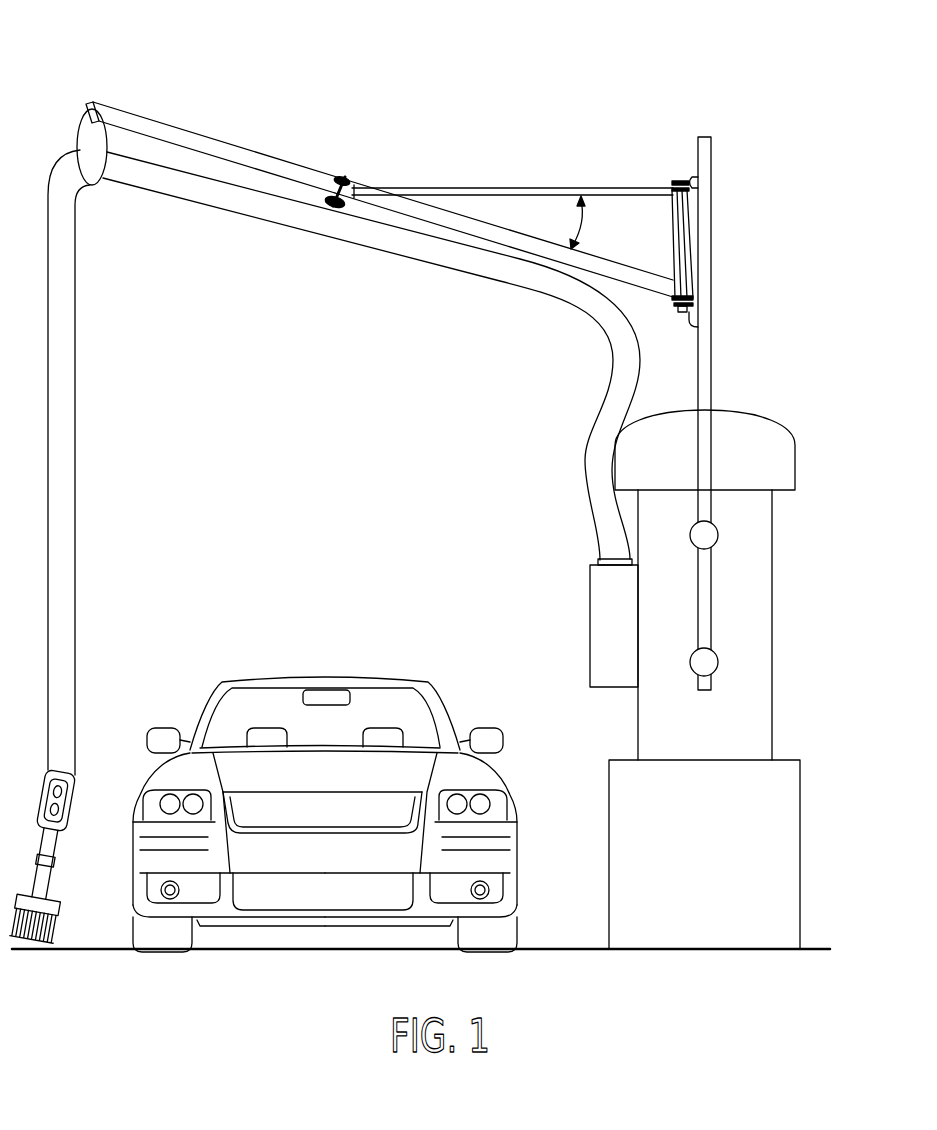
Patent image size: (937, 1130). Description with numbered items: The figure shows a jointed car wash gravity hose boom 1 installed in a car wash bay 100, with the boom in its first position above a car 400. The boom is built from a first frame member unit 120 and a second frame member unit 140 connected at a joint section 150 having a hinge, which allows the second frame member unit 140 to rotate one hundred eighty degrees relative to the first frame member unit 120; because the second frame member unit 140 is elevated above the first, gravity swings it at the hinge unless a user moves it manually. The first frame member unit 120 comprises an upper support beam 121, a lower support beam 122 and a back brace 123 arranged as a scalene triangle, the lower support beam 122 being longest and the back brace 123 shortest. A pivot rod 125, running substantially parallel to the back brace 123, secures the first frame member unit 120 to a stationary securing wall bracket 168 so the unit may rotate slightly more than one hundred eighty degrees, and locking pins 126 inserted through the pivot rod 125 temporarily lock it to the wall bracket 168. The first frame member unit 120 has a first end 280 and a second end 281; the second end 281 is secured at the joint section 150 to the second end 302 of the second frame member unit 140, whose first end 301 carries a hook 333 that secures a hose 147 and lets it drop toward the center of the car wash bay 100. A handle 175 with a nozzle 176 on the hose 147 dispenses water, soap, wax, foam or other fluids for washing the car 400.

The jointed car wash gravity hose boom 1 is at (470, 85).
The car wash bay 100 is at (351, 456).
The first frame member unit 120 is at (622, 264).
The upper support beam 121 is at (518, 186).
The lower support beam 122 is at (508, 229).
The back brace 123 is at (673, 243).
The pivot rod 125 is at (677, 182).
The locking pin 126 is at (678, 303).
The second frame member unit 140 is at (160, 120).
The hose 147 is at (63, 387).
The joint section 150 is at (345, 180).
The securing wall bracket 168 is at (693, 180).
The handle 175 is at (60, 820).
The nozzle 176 is at (48, 907).
The first end of the first frame member unit 280 is at (678, 285).
The second end of the first frame member unit 281 is at (360, 186).
The first end of the second frame member unit 301 is at (100, 115).
The second end of the second frame member unit 302 is at (322, 190).
The hook 333 is at (76, 147).
The car 400 is at (330, 677).